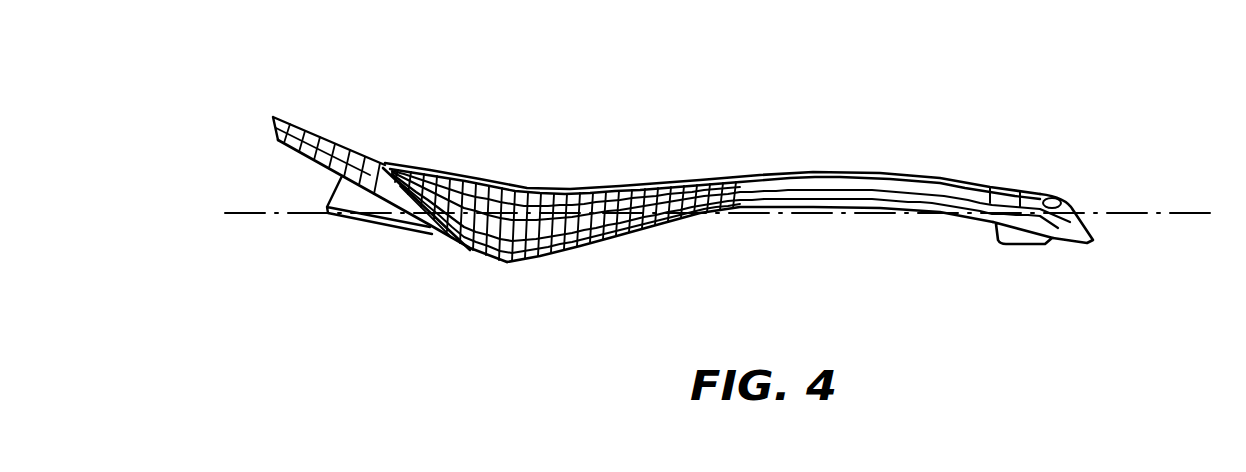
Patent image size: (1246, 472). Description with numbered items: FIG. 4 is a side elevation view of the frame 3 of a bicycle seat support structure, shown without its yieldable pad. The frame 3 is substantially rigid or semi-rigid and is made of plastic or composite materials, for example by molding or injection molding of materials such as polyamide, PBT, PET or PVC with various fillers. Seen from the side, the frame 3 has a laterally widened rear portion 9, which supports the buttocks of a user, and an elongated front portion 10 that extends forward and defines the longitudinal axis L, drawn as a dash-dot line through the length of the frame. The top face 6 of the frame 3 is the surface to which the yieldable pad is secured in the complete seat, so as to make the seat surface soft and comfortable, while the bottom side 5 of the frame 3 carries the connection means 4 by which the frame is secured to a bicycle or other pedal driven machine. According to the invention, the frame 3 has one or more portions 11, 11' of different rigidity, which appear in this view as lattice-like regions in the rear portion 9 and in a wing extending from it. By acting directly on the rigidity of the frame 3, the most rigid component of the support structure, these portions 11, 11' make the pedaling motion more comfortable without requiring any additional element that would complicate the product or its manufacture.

The frame 3 is at (937, 102).
The connection means 4 is at (393, 230).
The bottom side 5 is at (462, 246).
The top face 6 is at (620, 187).
The rear portion 9 is at (408, 160).
The front portion 10 is at (885, 208).
The portion of different rigidity 11 is at (566, 247).
The portion of different rigidity 11' is at (280, 155).
The longitudinal axis L is at (1170, 214).